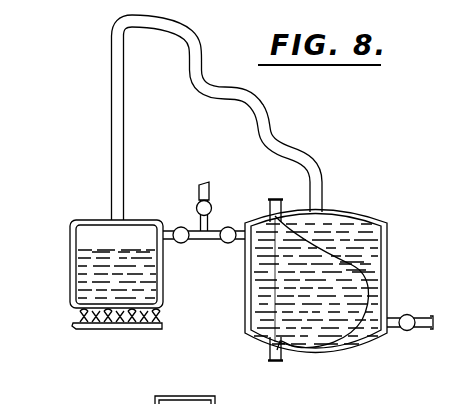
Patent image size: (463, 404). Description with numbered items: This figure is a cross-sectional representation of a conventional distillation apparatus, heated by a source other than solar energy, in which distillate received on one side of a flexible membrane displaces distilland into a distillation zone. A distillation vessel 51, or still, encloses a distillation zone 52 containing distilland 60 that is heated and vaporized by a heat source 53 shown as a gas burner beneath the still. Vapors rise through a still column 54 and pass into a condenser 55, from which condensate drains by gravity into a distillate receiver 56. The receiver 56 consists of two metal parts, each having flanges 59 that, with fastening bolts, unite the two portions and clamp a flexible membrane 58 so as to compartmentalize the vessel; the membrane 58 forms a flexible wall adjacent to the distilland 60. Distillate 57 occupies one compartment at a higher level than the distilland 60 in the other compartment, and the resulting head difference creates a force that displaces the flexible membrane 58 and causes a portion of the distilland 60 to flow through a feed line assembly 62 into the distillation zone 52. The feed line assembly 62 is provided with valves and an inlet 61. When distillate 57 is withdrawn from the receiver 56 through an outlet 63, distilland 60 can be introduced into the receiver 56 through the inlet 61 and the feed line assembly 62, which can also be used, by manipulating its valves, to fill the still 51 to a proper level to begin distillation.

The distillation vessel 51 is at (83, 219).
The distillation zone 52 is at (88, 250).
The heat source 53 is at (78, 326).
The still column 54 is at (112, 93).
The condenser 55 is at (265, 110).
The distillate receiver 56 is at (345, 207).
The distillate 57 is at (373, 233).
The flexible membrane 58 is at (367, 268).
The flanges 59 is at (270, 352).
The distilland 60 is at (97, 278).
The inlet 61 is at (199, 185).
The feed line assembly 62 is at (203, 240).
The outlet 63 is at (424, 329).